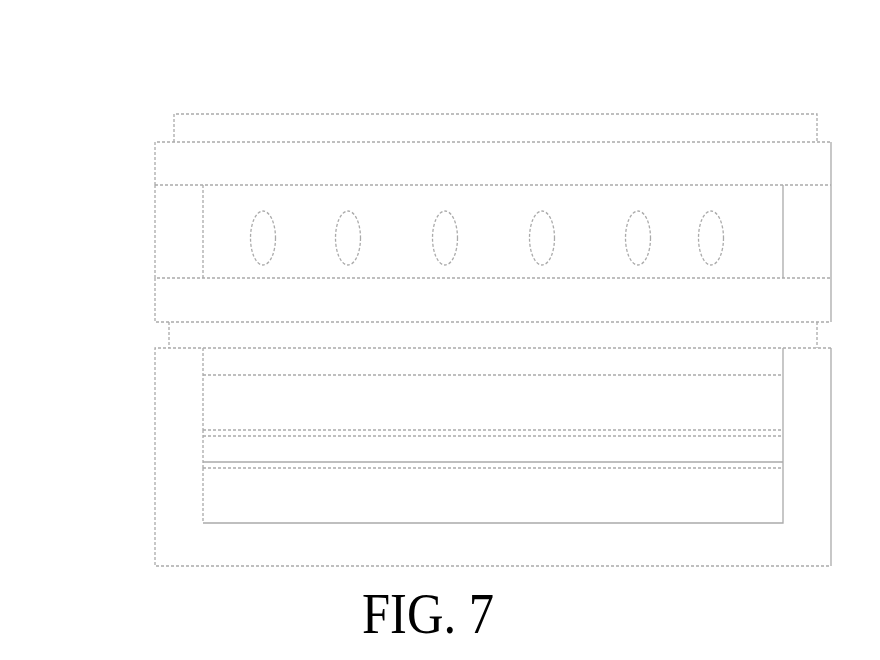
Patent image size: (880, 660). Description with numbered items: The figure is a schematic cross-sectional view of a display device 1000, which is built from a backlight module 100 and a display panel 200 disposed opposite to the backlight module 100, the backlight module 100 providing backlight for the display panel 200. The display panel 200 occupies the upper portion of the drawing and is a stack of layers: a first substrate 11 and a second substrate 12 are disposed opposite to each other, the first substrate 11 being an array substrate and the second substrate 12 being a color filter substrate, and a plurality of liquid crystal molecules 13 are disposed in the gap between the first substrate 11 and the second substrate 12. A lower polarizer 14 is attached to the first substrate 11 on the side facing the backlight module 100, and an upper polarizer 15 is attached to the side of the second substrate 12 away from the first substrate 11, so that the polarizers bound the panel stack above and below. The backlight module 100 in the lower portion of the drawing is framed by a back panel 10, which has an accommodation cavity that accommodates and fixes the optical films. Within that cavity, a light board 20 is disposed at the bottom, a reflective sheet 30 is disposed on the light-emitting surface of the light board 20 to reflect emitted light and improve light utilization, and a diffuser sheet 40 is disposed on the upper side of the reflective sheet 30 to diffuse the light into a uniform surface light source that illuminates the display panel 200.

The display device 1000 is at (257, 94).
The display panel 200 is at (84, 122).
The backlight module 100 is at (85, 377).
The upper polarizer 15 is at (260, 137).
The second substrate 12 is at (262, 173).
The liquid crystal molecules 13 is at (252, 254).
The first substrate 11 is at (247, 306).
The lower polarizer 14 is at (247, 340).
The diffuser sheet 40 is at (248, 398).
The reflective sheet 30 is at (248, 443).
The light board 20 is at (248, 497).
The back panel 10 is at (248, 546).